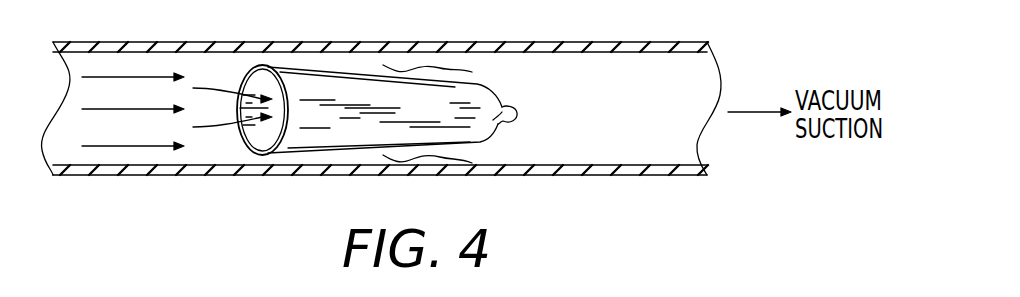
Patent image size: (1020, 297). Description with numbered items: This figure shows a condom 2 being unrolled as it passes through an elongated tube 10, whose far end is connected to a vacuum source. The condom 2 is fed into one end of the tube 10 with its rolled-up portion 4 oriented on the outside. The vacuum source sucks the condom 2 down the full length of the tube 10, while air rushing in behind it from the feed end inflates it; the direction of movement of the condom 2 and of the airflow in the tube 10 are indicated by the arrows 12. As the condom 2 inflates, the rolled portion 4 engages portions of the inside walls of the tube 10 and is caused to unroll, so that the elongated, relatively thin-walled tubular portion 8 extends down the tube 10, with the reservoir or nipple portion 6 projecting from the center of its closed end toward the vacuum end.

The condom 2 is at (240, 140).
The rolled-up portion 4 is at (257, 152).
The reservoir or nipple portion 6 is at (505, 106).
The tubular portion 8 is at (327, 77).
The elongated tube 10 is at (477, 43).
The arrows 12 is at (135, 77).